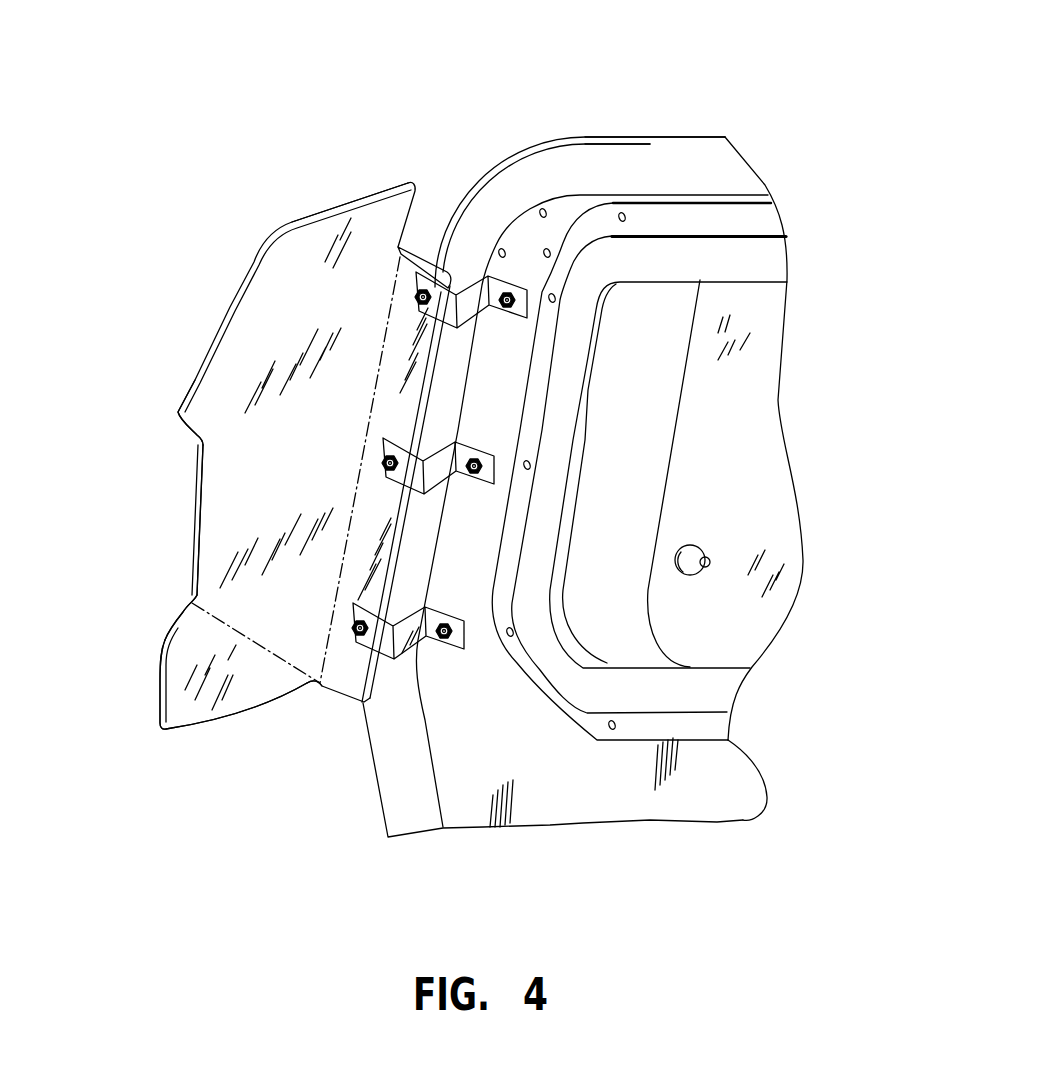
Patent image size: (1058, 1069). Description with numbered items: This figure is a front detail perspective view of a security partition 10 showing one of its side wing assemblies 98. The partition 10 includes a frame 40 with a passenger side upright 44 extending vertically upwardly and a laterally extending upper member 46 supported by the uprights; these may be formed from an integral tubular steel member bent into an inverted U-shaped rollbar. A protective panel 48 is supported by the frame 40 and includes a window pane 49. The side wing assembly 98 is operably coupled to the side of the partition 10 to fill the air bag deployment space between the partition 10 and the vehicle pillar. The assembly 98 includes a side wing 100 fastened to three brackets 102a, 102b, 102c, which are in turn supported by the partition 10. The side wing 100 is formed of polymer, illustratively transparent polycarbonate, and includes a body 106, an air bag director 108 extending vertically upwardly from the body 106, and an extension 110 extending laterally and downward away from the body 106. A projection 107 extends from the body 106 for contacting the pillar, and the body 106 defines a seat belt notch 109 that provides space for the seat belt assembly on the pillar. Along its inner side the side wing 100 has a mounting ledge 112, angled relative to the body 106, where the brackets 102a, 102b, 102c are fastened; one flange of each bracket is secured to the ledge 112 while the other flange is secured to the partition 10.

The security partition 10 is at (573, 419).
The frame 40 is at (545, 170).
The passenger side upright 44 is at (397, 773).
The upper member 46 is at (732, 170).
The protective panel 48 is at (733, 781).
The window pane 49 is at (735, 382).
The side wing assembly 98 is at (256, 424).
The side wing 100 is at (180, 370).
The bracket 102a is at (525, 308).
The bracket 102b is at (498, 476).
The bracket 102c is at (463, 628).
The body 106 is at (233, 498).
The projection 107 is at (193, 413).
The air bag director 108 is at (377, 212).
The seat belt notch 109 is at (188, 559).
The extension 110 is at (178, 687).
The mounting ledge 112 is at (344, 680).